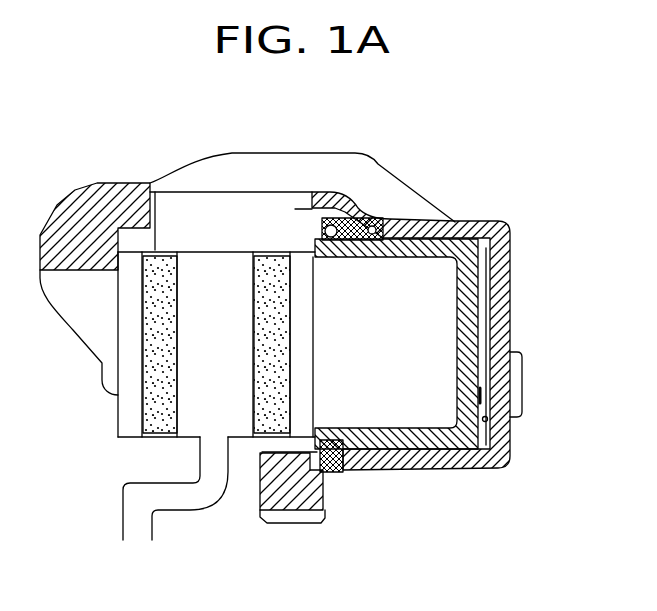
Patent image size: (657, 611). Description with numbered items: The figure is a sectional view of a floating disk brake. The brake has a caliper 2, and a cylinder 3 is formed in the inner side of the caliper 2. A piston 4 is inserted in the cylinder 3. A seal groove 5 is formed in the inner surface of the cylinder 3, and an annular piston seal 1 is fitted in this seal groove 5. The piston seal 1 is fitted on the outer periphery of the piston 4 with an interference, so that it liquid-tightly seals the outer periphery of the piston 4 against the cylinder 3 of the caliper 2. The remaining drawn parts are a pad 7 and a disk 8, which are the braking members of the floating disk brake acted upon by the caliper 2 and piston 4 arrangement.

The piston seal 1 is at (382, 218).
The caliper 2 is at (458, 222).
The cylinder 3 is at (488, 421).
The piston 4 is at (448, 440).
The seal groove 5 is at (378, 458).
The pad 7 is at (277, 277).
The disk 8 is at (212, 430).